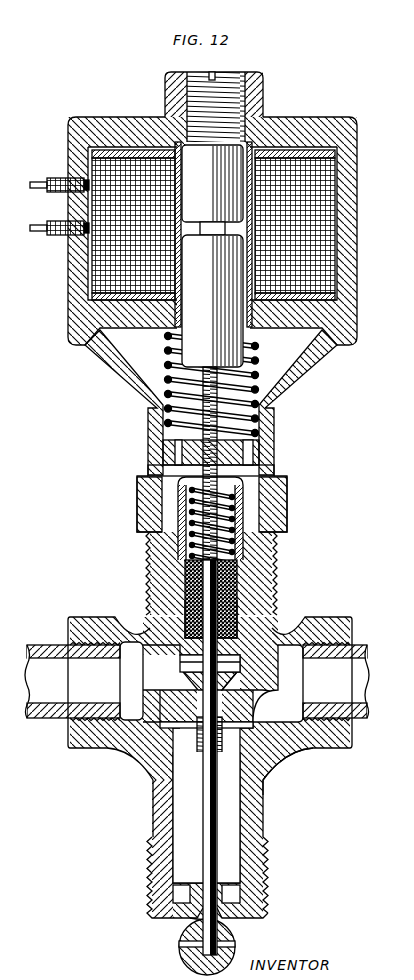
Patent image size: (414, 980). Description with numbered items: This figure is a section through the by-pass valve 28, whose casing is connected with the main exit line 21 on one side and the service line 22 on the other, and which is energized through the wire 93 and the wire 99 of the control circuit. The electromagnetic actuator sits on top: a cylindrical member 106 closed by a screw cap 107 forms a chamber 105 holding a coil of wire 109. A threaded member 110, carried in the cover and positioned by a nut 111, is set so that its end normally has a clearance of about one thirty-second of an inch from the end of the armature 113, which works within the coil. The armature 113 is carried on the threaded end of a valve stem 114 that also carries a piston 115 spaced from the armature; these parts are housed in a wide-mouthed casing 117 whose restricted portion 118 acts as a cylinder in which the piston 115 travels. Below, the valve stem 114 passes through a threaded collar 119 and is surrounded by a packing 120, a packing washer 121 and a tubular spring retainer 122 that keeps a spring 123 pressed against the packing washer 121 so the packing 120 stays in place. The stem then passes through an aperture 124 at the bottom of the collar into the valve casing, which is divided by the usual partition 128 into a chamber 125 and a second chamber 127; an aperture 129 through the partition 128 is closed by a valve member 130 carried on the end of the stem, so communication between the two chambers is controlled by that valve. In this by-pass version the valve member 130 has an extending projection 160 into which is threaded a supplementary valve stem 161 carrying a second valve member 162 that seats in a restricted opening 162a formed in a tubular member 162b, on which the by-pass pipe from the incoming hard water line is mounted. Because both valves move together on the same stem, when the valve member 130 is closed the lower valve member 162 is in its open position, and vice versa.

The main exit line 21 is at (47, 645).
The service line 22 is at (357, 640).
The by-pass valve 28 is at (105, 617).
The wire 93 is at (42, 225).
The wire 99 is at (42, 182).
The chamber 105 is at (90, 290).
The cylindrical member 106 is at (68, 139).
The screw cap 107 is at (93, 117).
The coil of wire 109 is at (100, 266).
The threaded member 110 is at (165, 97).
The nut 111 is at (165, 78).
The armature 113 is at (196, 240).
The valve stem 114 is at (143, 470).
The piston 115 is at (148, 448).
The wide-mouthed casing 117 is at (115, 389).
The restricted portion 118 is at (150, 430).
The threaded collar 119 is at (265, 578).
The packing 120 is at (237, 600).
The packing washer 121 is at (276, 566).
The tubular spring retainer 122 is at (178, 486).
The spring 123 is at (178, 544).
The aperture 124 is at (193, 640).
The chamber 125 is at (130, 680).
The second chamber 127 is at (288, 716).
The partition 128 is at (283, 680).
The aperture 129 is at (206, 735).
The valve member 130 is at (183, 668).
The extending projection 160 is at (222, 738).
The supplementary valve stem 161 is at (178, 793).
The valve member 162 is at (183, 965).
The restricted opening 162a is at (187, 919).
The tubular member 162b is at (157, 818).